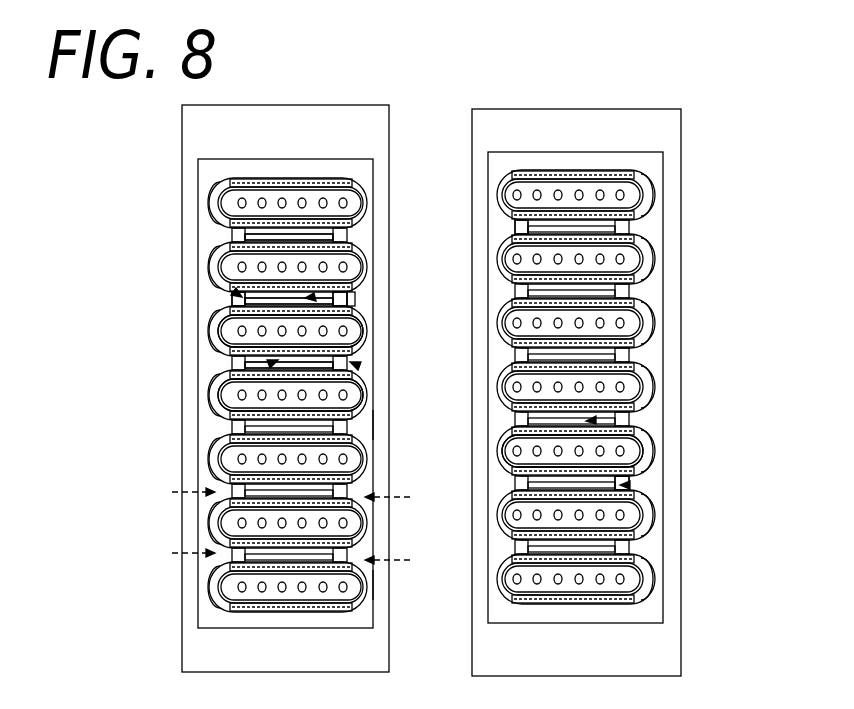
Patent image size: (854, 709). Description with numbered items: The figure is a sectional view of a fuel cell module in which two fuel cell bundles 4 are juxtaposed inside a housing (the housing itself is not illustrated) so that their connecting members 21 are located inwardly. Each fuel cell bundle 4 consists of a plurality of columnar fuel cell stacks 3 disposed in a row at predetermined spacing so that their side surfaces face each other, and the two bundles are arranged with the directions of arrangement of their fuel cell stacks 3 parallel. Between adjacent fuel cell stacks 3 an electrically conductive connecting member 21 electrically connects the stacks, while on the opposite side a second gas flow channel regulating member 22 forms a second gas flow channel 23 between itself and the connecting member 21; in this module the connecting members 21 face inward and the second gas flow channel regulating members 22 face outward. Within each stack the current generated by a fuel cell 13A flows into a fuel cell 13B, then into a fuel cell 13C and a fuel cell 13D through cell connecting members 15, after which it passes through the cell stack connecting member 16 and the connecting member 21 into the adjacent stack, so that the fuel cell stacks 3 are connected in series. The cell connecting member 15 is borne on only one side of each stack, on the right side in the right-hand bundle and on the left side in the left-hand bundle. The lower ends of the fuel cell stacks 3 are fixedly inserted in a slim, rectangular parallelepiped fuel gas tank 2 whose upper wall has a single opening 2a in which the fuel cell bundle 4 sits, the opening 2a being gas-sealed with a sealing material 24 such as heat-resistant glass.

The fuel gas tank 2 is at (365, 125).
The opening 2a is at (373, 462).
The fuel cell stack 3 is at (207, 431).
The fuel cell bundle 4 is at (373, 587).
The fuel cell 13A is at (352, 363).
The fuel cell 13B is at (276, 360).
The fuel cell 13C is at (240, 296).
The fuel cell 13D is at (307, 297).
The cell connecting member 15 is at (222, 331).
The cell stack connecting member 16 is at (350, 302).
The connecting member 21 is at (515, 225).
The second gas flow channel regulating member 22 is at (240, 300).
The second gas flow channel 23 is at (317, 233).
The sealing material 24 is at (368, 425).